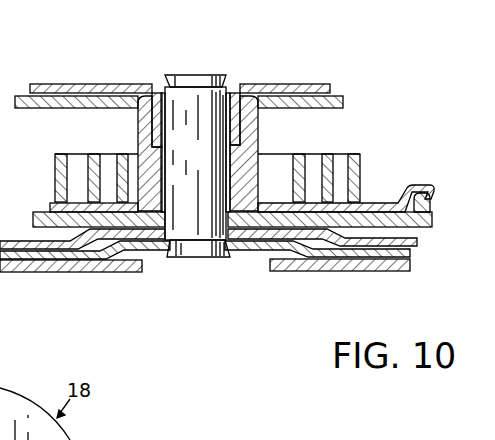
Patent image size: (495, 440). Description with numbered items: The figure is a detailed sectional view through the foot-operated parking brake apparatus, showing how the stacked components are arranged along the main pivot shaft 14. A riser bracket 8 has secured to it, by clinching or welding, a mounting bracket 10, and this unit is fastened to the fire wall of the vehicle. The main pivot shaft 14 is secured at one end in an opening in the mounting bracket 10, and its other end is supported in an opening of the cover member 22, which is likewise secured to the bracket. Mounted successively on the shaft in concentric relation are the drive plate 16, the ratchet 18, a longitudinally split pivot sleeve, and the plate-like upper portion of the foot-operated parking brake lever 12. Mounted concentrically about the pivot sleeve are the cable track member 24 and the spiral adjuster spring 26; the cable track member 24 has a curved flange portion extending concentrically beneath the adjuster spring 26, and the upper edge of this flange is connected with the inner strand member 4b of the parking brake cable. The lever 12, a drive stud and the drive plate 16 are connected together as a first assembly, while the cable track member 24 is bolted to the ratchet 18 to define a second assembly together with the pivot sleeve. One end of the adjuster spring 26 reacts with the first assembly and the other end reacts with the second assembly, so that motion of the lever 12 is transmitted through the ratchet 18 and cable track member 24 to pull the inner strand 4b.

The main pivot shaft 14 is at (182, 118).
The cover member 22 is at (236, 80).
The foot-operated parking brake lever 12 is at (293, 92).
The spiral adjuster spring 26 is at (363, 172).
The cable track member 24 is at (432, 184).
The inner strand member 4b is at (428, 200).
The ratchet 18 is at (429, 228).
The drive plate 16 is at (308, 243).
The mounting bracket 10 is at (84, 273).
The riser bracket 8 is at (385, 271).